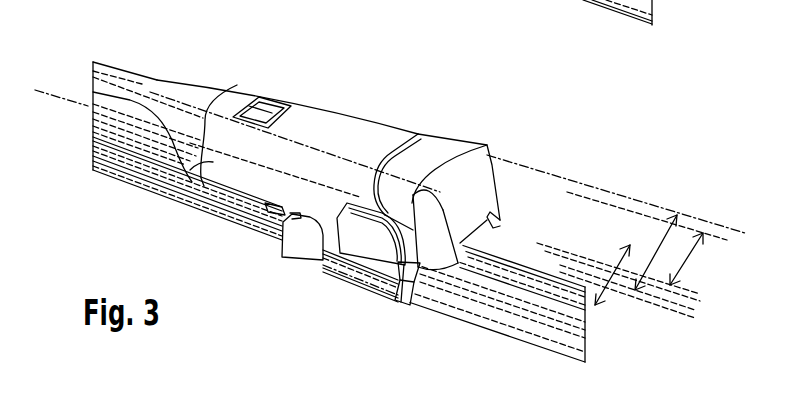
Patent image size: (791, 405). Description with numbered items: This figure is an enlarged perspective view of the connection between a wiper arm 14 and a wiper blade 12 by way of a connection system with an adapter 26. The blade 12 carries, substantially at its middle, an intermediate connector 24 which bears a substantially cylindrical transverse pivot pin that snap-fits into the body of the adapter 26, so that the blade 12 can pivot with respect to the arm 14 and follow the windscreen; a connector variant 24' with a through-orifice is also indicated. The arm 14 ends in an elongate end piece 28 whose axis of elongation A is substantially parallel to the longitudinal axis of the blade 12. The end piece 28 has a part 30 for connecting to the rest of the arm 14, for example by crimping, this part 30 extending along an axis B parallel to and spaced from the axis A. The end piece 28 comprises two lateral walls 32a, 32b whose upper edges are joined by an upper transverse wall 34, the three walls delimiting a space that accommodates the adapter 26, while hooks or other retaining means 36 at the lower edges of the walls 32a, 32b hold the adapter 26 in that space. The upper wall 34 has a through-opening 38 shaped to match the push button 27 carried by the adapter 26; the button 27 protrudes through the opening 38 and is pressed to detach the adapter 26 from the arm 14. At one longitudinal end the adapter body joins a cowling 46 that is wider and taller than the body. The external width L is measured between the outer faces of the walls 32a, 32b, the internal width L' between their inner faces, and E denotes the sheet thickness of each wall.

The blade 12 is at (488, 283).
The arm 14 is at (180, 80).
The intermediate connector 24 is at (371, 297).
The connector 24' is at (418, 14).
The adapter 26 is at (504, 179).
The push button 27 is at (278, 107).
The end piece 28 is at (258, 78).
The connecting part 30 is at (120, 72).
The lateral wall 32a is at (201, 190).
The lateral wall 32b is at (388, 130).
The upper transverse wall 34 is at (338, 134).
The retaining means 36 is at (258, 210).
The through-opening 38 is at (236, 108).
The cowling 46 is at (475, 160).
The axis of elongation A is at (577, 247).
The axis B is at (60, 96).
The thickness E is at (606, 273).
The external width L is at (656, 280).
The internal width L' is at (694, 288).